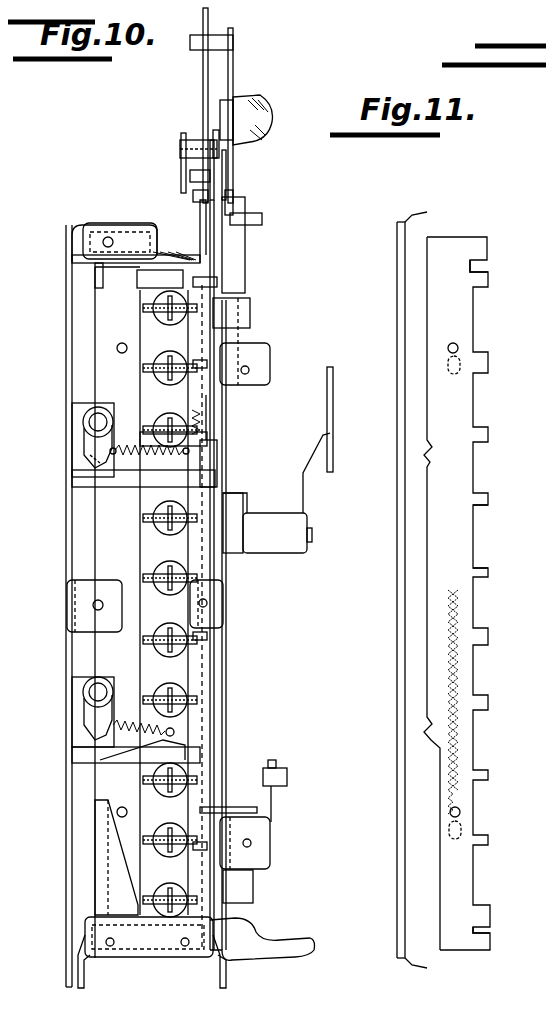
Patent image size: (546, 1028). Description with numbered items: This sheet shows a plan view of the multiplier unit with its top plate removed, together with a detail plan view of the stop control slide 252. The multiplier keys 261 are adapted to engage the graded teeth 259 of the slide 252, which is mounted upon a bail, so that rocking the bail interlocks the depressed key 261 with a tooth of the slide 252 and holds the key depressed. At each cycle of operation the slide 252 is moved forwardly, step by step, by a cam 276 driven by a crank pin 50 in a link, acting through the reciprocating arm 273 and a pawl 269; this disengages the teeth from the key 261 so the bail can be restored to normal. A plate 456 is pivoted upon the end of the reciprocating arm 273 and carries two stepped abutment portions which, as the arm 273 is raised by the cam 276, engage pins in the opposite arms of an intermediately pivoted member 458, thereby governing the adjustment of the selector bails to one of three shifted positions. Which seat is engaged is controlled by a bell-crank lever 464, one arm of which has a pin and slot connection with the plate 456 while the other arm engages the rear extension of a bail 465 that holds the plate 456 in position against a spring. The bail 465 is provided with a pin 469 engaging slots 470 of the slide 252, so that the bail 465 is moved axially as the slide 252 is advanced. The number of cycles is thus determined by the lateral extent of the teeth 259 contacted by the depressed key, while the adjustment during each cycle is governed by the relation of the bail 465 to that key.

In FIG. 10, the crank pin 50 is at (263, 219).
In FIG. 10, the slide 252 is at (102, 341).
In FIG. 11, the slide 252 is at (436, 618).
In FIG. 10, the teeth 259 is at (150, 432).
In FIG. 11, the teeth 259 is at (480, 507).
In FIG. 10, the multiplier keys 261 is at (184, 641).
In FIG. 10, the pawl 269 is at (90, 450).
In FIG. 10, the reciprocating arm 273 is at (210, 408).
In FIG. 10, the cam 276 is at (246, 244).
In FIG. 10, the plate 456 is at (203, 96).
In FIG. 10, the intermediately pivoted member 458 is at (232, 80).
In FIG. 10, the bell-crank lever 464 is at (184, 174).
In FIG. 10, the bail 465 is at (213, 567).
In FIG. 10, the pin 469 is at (150, 255).
In FIG. 11, the slots 470 is at (478, 260).